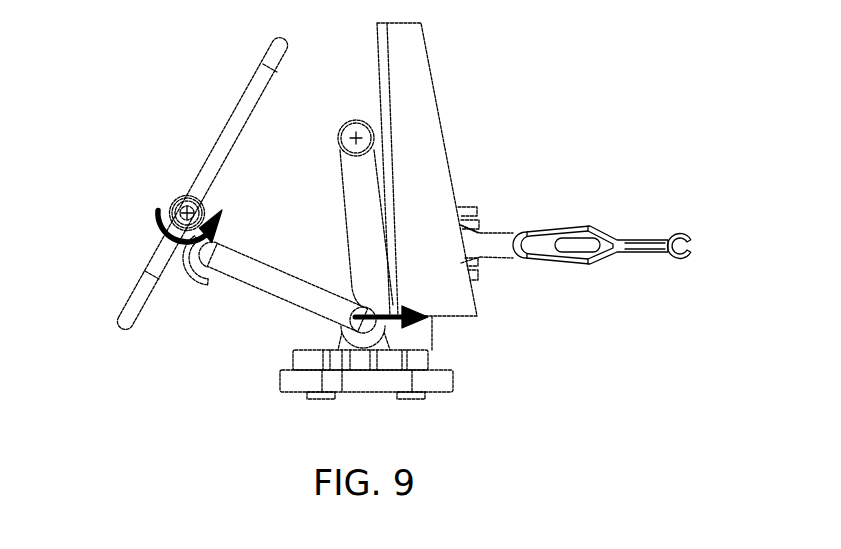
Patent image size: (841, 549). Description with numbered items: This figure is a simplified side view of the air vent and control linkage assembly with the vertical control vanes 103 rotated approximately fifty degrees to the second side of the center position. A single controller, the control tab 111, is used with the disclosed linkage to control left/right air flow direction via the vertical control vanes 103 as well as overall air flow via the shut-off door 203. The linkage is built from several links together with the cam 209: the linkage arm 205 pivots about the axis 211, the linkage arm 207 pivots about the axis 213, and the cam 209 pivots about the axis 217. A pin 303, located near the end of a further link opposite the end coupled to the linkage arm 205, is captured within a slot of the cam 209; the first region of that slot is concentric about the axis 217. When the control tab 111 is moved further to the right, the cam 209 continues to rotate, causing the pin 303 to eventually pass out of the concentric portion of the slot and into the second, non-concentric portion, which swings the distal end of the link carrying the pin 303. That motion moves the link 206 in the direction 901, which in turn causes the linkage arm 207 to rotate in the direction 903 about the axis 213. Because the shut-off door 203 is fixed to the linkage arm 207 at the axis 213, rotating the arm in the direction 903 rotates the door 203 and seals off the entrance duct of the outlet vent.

The vertical control vanes 103 is at (420, 198).
The control tab 111 is at (632, 242).
The shut-off door 203 is at (155, 268).
The linkage arm 205 is at (357, 218).
The link 206 is at (258, 280).
The linkage arm 207 is at (223, 237).
The cam 209 is at (438, 380).
The axis 211 is at (357, 135).
The axis 213 is at (192, 200).
The axis 217 is at (410, 400).
The pin 303 is at (318, 400).
The direction 901 is at (380, 314).
The direction 903 is at (160, 232).